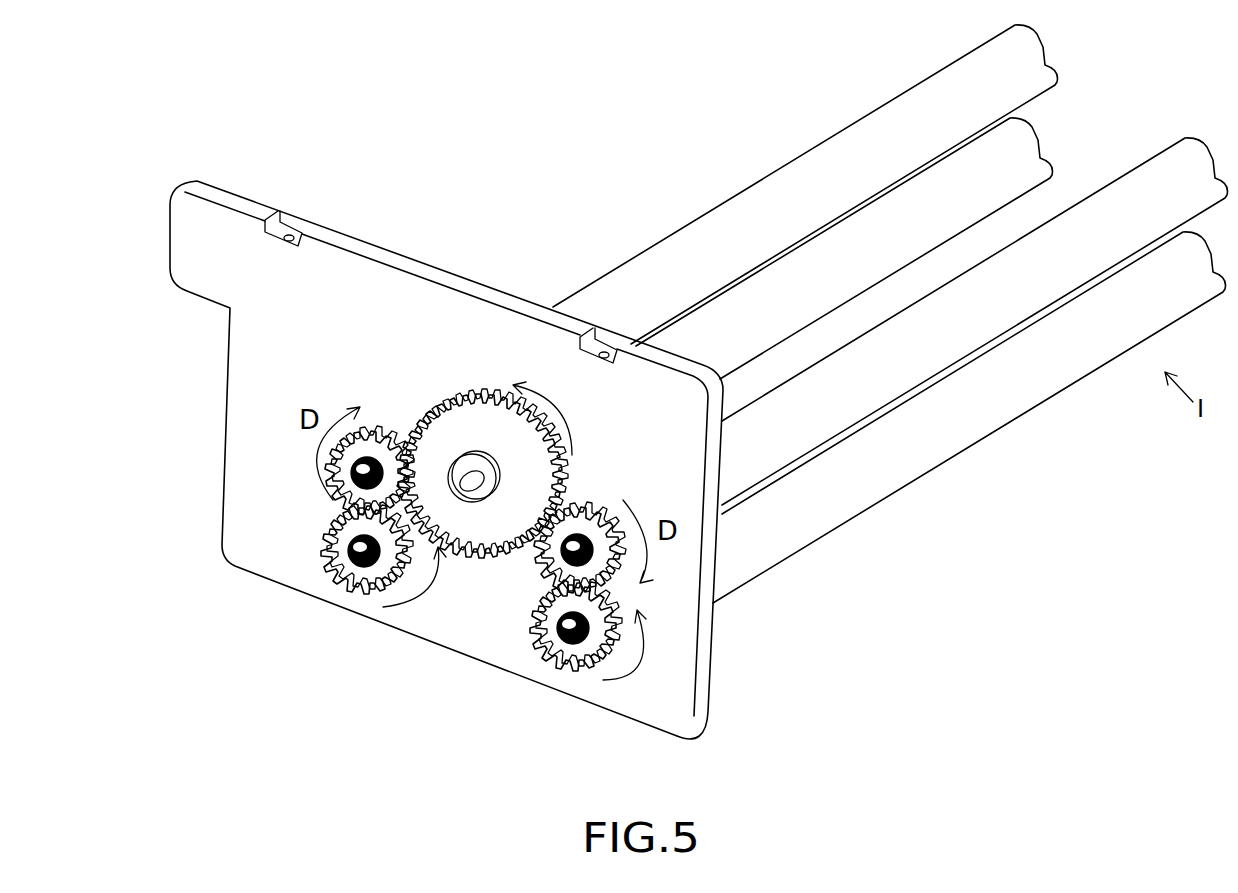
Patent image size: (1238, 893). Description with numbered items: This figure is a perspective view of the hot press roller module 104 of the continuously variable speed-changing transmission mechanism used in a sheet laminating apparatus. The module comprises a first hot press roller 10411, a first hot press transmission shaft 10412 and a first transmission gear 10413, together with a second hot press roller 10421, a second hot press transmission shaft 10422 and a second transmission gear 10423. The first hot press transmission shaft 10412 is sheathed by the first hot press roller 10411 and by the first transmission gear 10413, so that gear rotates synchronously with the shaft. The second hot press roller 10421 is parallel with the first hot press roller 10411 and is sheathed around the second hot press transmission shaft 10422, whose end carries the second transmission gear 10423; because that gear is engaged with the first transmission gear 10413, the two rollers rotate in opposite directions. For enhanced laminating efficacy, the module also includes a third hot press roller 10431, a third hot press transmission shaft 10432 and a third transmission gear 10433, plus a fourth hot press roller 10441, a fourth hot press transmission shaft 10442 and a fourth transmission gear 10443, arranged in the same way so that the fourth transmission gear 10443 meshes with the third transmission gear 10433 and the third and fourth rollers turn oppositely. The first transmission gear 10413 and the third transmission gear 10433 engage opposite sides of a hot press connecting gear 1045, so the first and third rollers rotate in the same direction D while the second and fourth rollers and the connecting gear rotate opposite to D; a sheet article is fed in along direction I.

The hot press roller module 104 is at (870, 530).
The hot press connecting gear 1045 is at (445, 428).
The first hot press roller 10411 is at (983, 308).
The second hot press roller 10421 is at (962, 422).
The third hot press roller 10431 is at (685, 258).
The fourth hot press roller 10441 is at (863, 245).
The first hot press transmission shaft 10412 is at (565, 550).
The first transmission gear 10413 is at (607, 553).
The second hot press transmission shaft 10422 is at (577, 632).
The second transmission gear 10423 is at (600, 650).
The third hot press transmission shaft 10432 is at (352, 470).
The third transmission gear 10433 is at (343, 428).
The fourth hot press transmission shaft 10442 is at (345, 558).
The fourth transmission gear 10443 is at (327, 535).